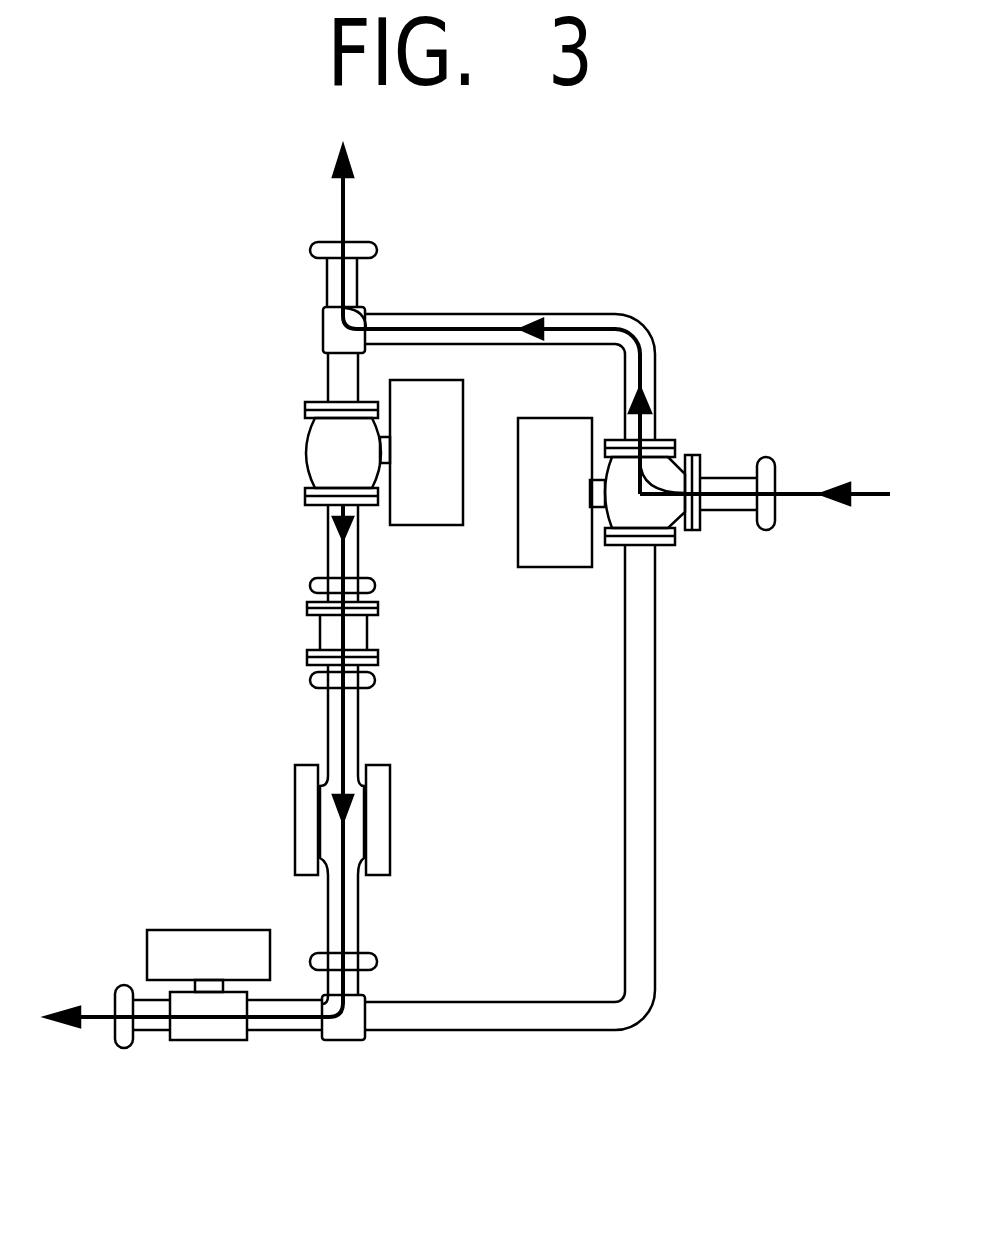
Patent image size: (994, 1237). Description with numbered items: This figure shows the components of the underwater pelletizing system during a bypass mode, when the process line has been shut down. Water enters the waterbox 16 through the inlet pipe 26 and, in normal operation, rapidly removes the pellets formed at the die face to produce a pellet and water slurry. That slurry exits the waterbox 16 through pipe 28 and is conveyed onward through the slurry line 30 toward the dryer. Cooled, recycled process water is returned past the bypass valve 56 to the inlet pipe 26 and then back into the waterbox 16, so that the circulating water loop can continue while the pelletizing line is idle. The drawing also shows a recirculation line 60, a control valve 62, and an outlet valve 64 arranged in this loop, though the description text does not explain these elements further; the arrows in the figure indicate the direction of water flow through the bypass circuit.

The waterbox 16 is at (303, 810).
The inlet pipe 26 is at (345, 913).
The pipe 28 is at (345, 730).
The slurry line 30 is at (343, 208).
The bypass valve 56 is at (655, 510).
The recirculation line 60 is at (592, 315).
The control valve 62 is at (327, 453).
The outlet valve 64 is at (208, 1022).